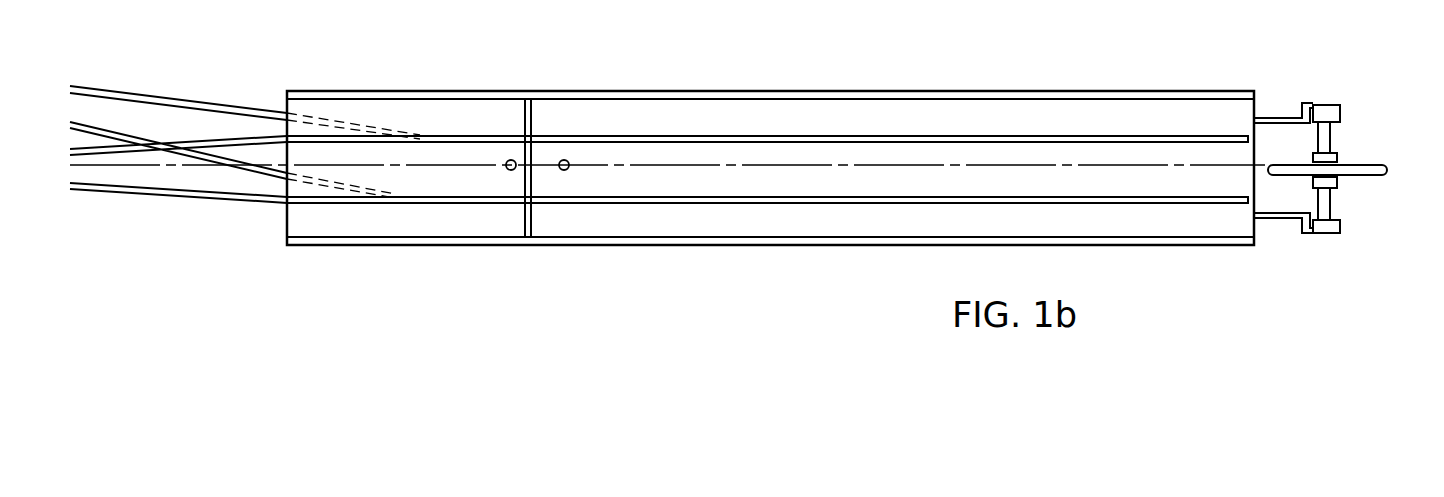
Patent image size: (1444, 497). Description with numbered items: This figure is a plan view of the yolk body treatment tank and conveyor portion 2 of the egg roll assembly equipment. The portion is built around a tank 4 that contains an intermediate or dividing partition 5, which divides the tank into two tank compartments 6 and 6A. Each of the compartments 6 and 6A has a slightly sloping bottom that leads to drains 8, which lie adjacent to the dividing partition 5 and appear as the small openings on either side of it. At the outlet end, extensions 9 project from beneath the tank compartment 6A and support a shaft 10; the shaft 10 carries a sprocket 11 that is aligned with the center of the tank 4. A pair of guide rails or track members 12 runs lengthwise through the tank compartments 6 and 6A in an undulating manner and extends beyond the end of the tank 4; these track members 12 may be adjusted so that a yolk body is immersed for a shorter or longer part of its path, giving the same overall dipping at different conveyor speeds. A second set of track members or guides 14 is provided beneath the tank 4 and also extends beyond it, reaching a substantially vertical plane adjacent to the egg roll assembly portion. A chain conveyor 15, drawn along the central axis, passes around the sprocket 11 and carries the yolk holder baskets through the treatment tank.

The yolk body treatment tank and conveyor portion 2 is at (970, 86).
The tank 4 is at (677, 110).
The dividing partition 5 is at (532, 118).
The tank compartment 6 is at (493, 232).
The tank compartment 6A is at (607, 232).
The drains 8 is at (506, 171).
The extensions 9 is at (1270, 117).
The shaft 10 is at (1333, 203).
The sprocket 11 is at (1390, 169).
The guide rails or track members 12 is at (890, 135).
The second set of track members or guides 14 is at (110, 129).
The chain conveyor 15 is at (963, 168).